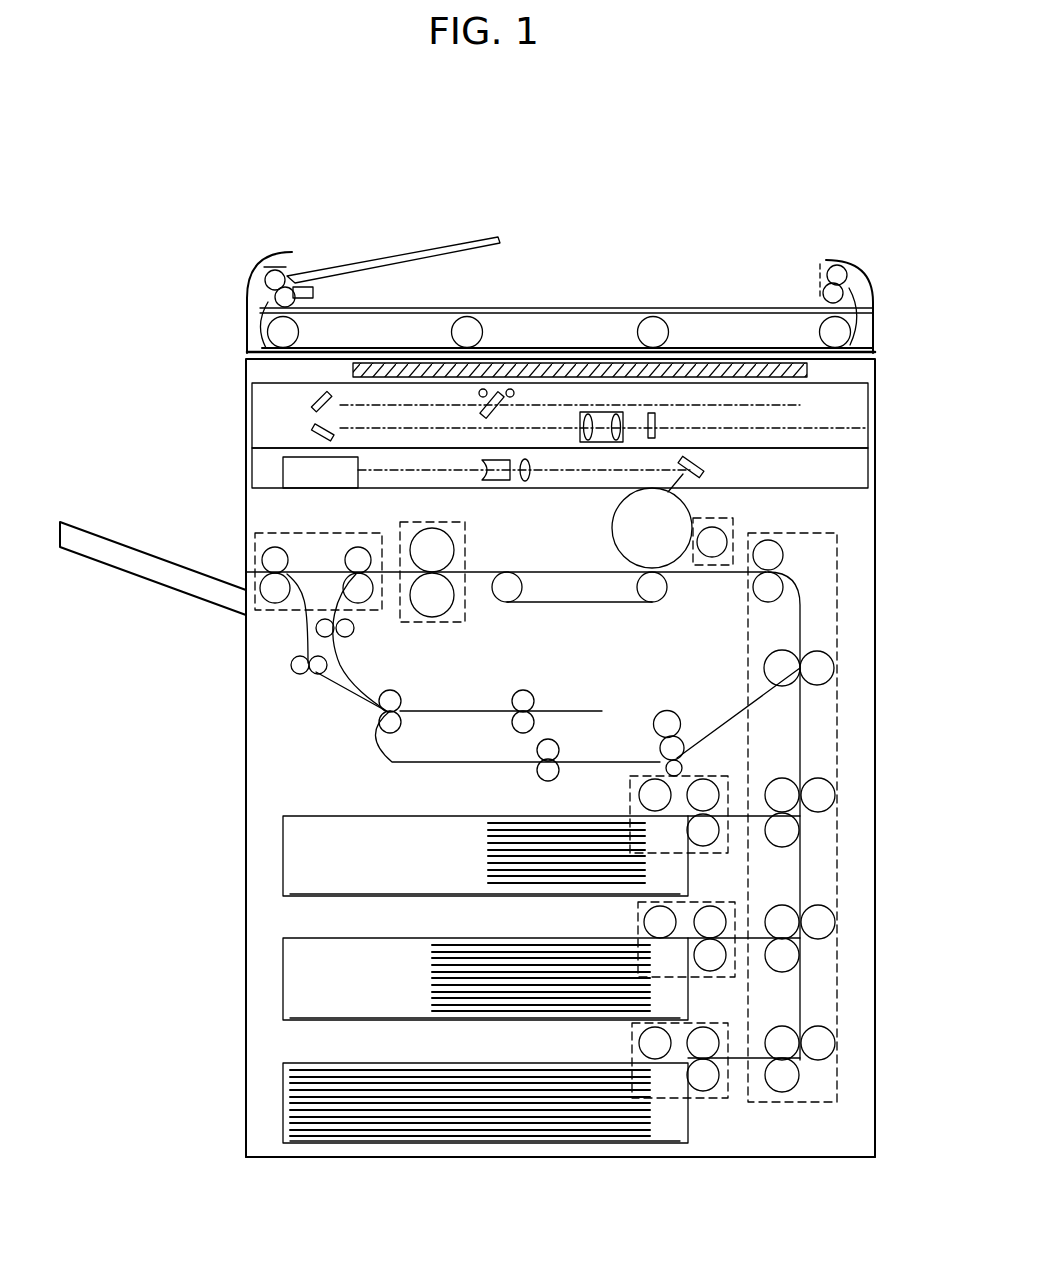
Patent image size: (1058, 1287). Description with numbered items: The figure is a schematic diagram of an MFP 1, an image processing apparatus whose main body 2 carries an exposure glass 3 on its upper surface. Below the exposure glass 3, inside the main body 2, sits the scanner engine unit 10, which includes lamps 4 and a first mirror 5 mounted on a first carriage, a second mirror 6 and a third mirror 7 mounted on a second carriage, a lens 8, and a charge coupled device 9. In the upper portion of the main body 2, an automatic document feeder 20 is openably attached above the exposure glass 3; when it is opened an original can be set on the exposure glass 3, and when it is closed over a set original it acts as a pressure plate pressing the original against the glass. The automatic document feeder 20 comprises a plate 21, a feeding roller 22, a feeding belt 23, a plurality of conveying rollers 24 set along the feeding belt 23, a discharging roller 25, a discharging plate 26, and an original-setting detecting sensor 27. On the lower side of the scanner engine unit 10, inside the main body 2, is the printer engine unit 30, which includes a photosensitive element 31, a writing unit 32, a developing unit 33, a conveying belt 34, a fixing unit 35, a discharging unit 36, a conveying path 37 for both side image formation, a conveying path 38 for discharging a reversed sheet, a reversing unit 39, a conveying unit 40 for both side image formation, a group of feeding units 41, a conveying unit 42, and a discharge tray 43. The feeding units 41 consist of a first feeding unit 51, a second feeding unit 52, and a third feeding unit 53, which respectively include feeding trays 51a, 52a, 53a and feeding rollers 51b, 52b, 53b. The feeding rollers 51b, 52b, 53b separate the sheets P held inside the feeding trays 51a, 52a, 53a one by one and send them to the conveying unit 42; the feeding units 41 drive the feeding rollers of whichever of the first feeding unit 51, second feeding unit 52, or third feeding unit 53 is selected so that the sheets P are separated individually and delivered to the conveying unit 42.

The MFP 1 is at (796, 150).
The main body 2 is at (875, 660).
The exposure glass 3 is at (808, 368).
The lamps 4 is at (487, 388).
The first mirror 5 is at (497, 408).
The second mirror 6 is at (318, 402).
The third mirror 7 is at (316, 428).
The lens 8 is at (624, 414).
The charge coupled device (CCD) 9 is at (657, 428).
The scanner engine unit 10 is at (850, 420).
The automatic document feeder (ADF) 20 is at (838, 232).
The plate 21 is at (442, 246).
The feeding roller 22 is at (288, 268).
The feeding belt 23 is at (566, 348).
The conveying rollers 24 is at (472, 322).
The discharging roller 25 is at (826, 270).
The discharging plate 26 is at (747, 308).
The original-setting detecting sensor 27 is at (318, 292).
The printer engine unit 30 is at (850, 515).
The photosensitive element 31 is at (612, 528).
The writing unit 32 is at (850, 468).
The developing unit 33 is at (733, 530).
The conveying belt 34 is at (622, 604).
The fixing unit 35 is at (466, 558).
The discharging unit 36 is at (316, 534).
The conveying path for both side image formation 37 is at (354, 664).
The conveying path for discharging a reversed sheet 38 is at (270, 650).
The reversing unit 39 is at (553, 703).
The conveying unit for both side image formation 40 is at (403, 768).
The group of feeding units 41 is at (270, 1136).
The conveying unit 42 is at (794, 1102).
The discharge tray 43 is at (118, 544).
The first feeding unit 51 is at (283, 858).
The feeding tray 51a is at (365, 896).
The feeding rollers 51b is at (698, 854).
The second feeding unit 52 is at (283, 970).
The feeding tray 52a is at (365, 1020).
The feeding rollers 52b is at (698, 978).
The third feeding unit 53 is at (283, 1082).
The feeding tray 53a is at (365, 1144).
The feeding rollers 53b is at (698, 1100).
The sheets P is at (576, 816).